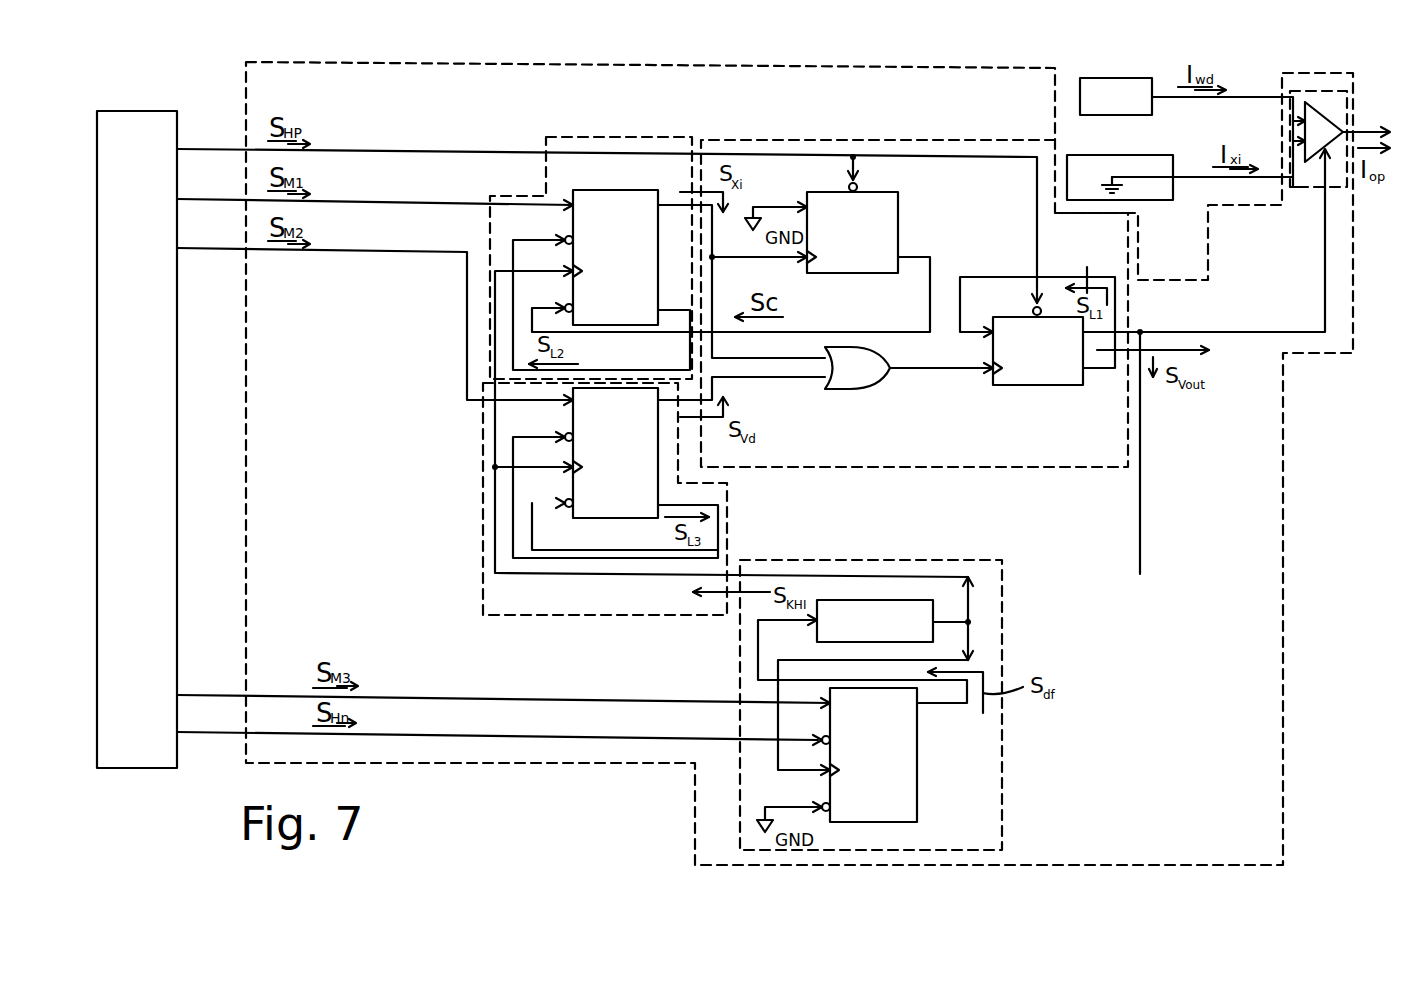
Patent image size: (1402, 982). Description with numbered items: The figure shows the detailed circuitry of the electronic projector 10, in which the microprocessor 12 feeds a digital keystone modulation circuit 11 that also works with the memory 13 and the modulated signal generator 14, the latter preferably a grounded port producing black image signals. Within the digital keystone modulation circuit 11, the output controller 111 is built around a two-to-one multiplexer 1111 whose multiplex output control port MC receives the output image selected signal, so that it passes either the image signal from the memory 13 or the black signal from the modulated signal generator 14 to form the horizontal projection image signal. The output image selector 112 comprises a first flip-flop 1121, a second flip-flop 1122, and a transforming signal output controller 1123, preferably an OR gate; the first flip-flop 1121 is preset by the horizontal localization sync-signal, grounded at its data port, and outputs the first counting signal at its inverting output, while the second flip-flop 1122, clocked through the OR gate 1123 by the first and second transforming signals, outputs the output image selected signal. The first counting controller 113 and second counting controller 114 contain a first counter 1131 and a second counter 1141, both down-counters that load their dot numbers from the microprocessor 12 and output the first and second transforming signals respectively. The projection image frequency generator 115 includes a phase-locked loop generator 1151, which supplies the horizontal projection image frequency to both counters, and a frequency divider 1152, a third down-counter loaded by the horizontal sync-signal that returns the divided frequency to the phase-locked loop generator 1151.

The electronic projector 10 is at (178, 80).
The digital keystone modulation circuit 11 is at (497, 771).
The microprocessor 12 is at (150, 128).
The memory 13 is at (1090, 92).
The modulated signal generator 14 is at (1087, 155).
The output controller 111 is at (1307, 171).
The 2-to-1 multiplexer 1111 is at (1322, 148).
The output image selector 112 is at (721, 136).
The first counting controller 113 is at (556, 135).
The second counting controller 114 is at (480, 533).
The projection image frequency generator 115 is at (1006, 814).
The first flip-flop 1121 is at (897, 206).
The second flip-flop 1122 is at (1042, 380).
The transforming signal output controller 1123 is at (868, 371).
The first counter 1131 is at (623, 213).
The second counter 1141 is at (573, 450).
The phase-locked loop generator 1151 is at (918, 617).
The frequency divider 1152 is at (897, 762).